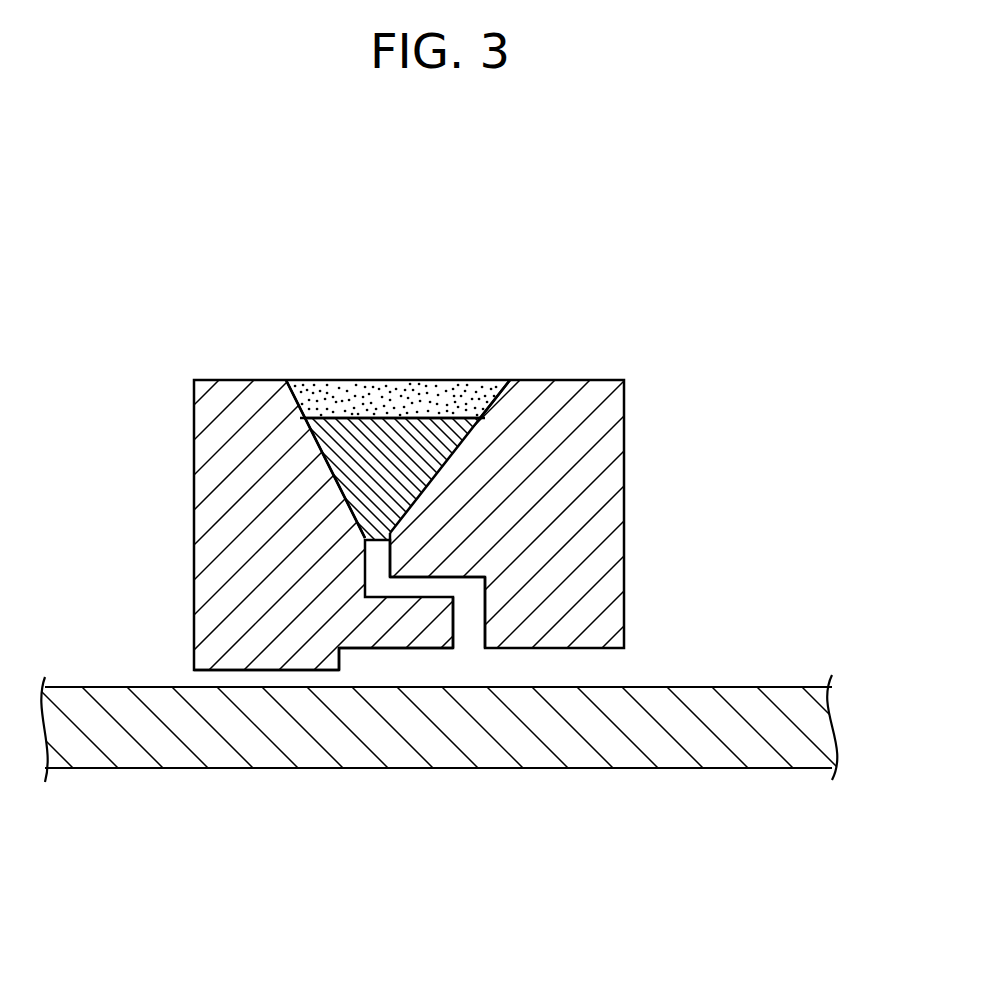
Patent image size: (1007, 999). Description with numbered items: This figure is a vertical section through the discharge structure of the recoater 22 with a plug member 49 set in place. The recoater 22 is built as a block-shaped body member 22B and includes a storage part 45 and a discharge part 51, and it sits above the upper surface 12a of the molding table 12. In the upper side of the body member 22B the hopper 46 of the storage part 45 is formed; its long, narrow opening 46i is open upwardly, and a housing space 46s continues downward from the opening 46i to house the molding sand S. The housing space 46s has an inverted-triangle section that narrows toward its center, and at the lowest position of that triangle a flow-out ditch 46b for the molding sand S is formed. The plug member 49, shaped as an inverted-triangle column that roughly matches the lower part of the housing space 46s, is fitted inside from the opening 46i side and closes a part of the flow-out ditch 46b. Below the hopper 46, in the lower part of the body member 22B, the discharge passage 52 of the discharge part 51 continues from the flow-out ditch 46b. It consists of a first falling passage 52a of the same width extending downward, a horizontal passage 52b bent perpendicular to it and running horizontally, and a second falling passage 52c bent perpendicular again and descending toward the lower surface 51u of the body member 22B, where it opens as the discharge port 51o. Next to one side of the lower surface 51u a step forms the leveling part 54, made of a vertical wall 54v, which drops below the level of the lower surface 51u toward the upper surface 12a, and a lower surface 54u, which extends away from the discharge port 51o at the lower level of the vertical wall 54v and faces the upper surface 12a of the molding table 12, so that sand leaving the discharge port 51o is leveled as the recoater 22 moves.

The molding table 12 is at (703, 745).
The upper surface of the molding table 12a is at (770, 687).
The recoater 22 is at (658, 337).
The body member 22B is at (615, 413).
The storage part 45 is at (212, 430).
The hopper 46 is at (463, 400).
The opening 46i is at (335, 400).
The housing space 46s is at (383, 402).
The flow-out ditch 46b is at (365, 538).
The molding sand S is at (488, 397).
The plug member 49 is at (427, 457).
The discharge part 51 is at (212, 554).
The lower surface of the body member 51u is at (408, 649).
The discharge port 51o is at (467, 649).
The discharge passage 52 is at (735, 550).
The first falling passage 52a is at (380, 562).
The horizontal passage 52b is at (468, 588).
The second falling passage 52c is at (468, 627).
The leveling part 54 is at (228, 653).
The lower surface of the leveling part 54u is at (267, 670).
The vertical wall 54v is at (342, 663).